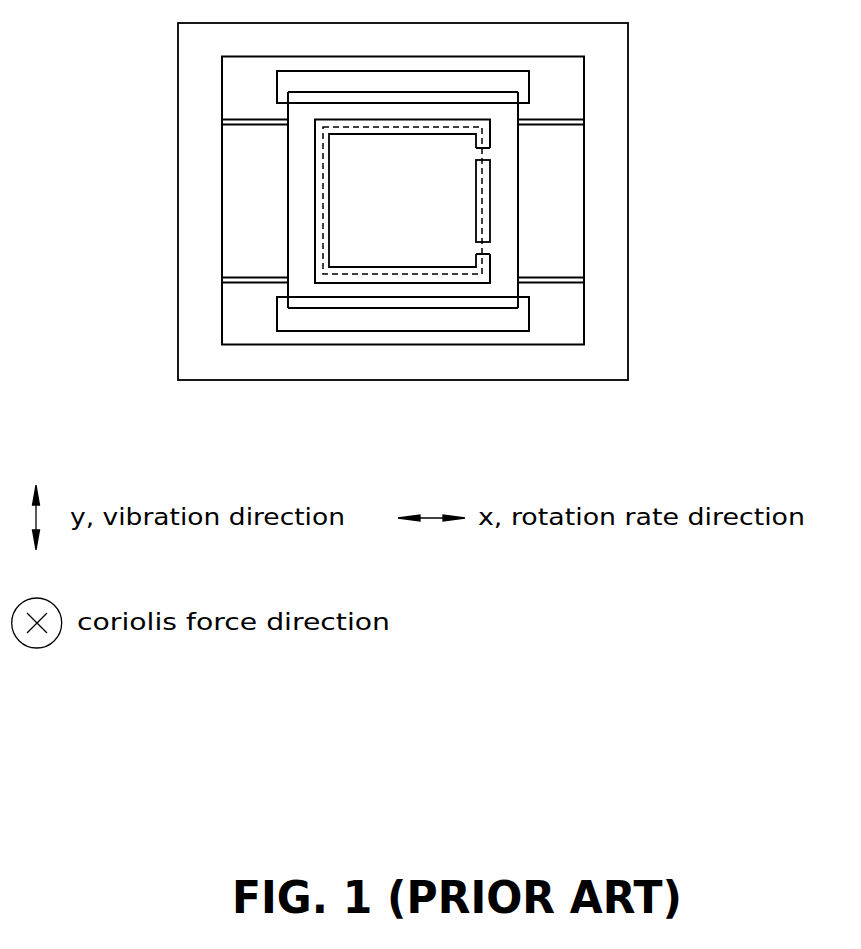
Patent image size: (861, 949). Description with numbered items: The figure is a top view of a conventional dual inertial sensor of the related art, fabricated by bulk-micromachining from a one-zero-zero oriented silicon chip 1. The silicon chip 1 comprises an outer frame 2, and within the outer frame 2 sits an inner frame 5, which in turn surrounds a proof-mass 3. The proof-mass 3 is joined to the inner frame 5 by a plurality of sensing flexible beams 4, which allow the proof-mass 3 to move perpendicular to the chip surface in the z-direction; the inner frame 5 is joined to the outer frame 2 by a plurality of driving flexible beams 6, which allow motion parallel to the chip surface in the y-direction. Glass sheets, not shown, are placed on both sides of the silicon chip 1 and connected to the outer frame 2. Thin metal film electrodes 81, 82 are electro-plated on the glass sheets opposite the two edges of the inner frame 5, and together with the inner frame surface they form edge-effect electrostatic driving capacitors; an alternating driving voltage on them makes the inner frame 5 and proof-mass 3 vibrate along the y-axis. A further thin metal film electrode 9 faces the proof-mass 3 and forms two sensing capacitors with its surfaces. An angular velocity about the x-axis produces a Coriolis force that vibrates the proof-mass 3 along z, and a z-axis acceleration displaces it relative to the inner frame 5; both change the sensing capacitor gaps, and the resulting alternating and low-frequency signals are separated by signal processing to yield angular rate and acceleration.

The silicon chip 1 is at (629, 62).
The outer frame 2 is at (613, 214).
The proof-mass 3 is at (370, 206).
The sensing flexible beams 4 is at (482, 153).
The inner frame 5 is at (300, 208).
The driving flexible beams 6 is at (222, 122).
The thin metal film electrode 81 is at (283, 85).
The thin metal film electrode 82 is at (282, 322).
The thin metal film electrode 9 is at (476, 199).